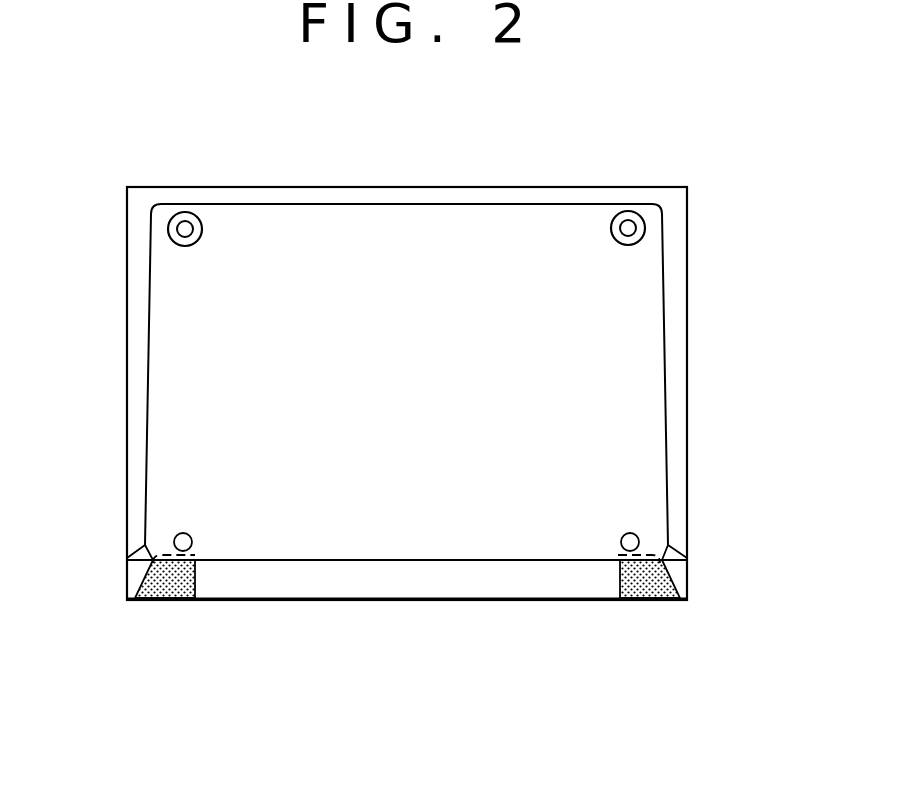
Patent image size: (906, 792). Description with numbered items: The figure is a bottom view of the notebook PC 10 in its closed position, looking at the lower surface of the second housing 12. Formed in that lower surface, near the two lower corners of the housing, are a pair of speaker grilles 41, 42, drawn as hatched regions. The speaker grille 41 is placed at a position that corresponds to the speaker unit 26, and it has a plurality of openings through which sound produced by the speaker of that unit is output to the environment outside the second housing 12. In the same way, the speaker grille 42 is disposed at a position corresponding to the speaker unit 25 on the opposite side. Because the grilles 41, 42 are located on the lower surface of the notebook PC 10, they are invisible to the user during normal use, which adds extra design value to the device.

The notebook PC 10 is at (393, 618).
The second housing 12 is at (432, 187).
The speaker unit 25 is at (640, 602).
The speaker unit 26 is at (165, 602).
The speaker grille 41 is at (145, 577).
The speaker grille 42 is at (660, 583).